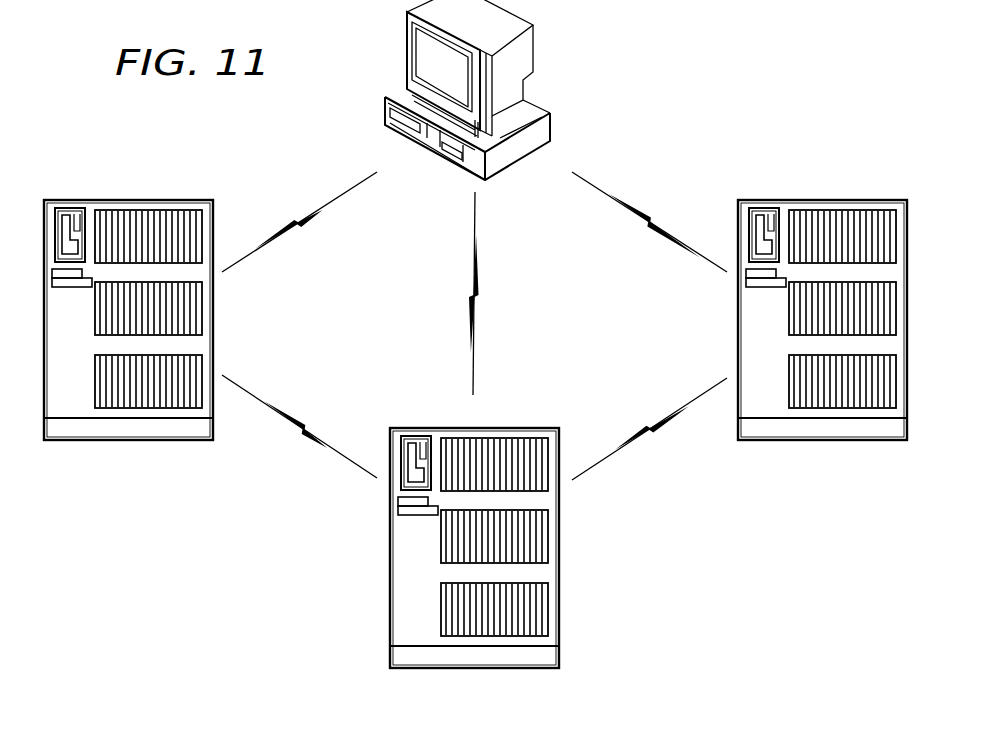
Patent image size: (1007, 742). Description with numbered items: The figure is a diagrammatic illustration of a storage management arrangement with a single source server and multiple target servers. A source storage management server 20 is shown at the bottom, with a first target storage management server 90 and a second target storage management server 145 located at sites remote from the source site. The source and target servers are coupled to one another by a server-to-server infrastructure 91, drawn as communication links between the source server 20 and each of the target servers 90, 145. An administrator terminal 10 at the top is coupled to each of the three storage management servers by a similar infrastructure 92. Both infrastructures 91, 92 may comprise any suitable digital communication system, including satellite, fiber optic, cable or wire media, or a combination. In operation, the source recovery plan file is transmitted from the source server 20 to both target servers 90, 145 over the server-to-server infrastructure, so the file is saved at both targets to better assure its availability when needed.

The administrator terminal 10 is at (568, 62).
The source storage management server 20 is at (592, 555).
The target storage management server 90 is at (188, 178).
The target storage management server 145 is at (748, 178).
The server-to-server infrastructure 91 is at (323, 442).
The infrastructure 92 is at (323, 208).